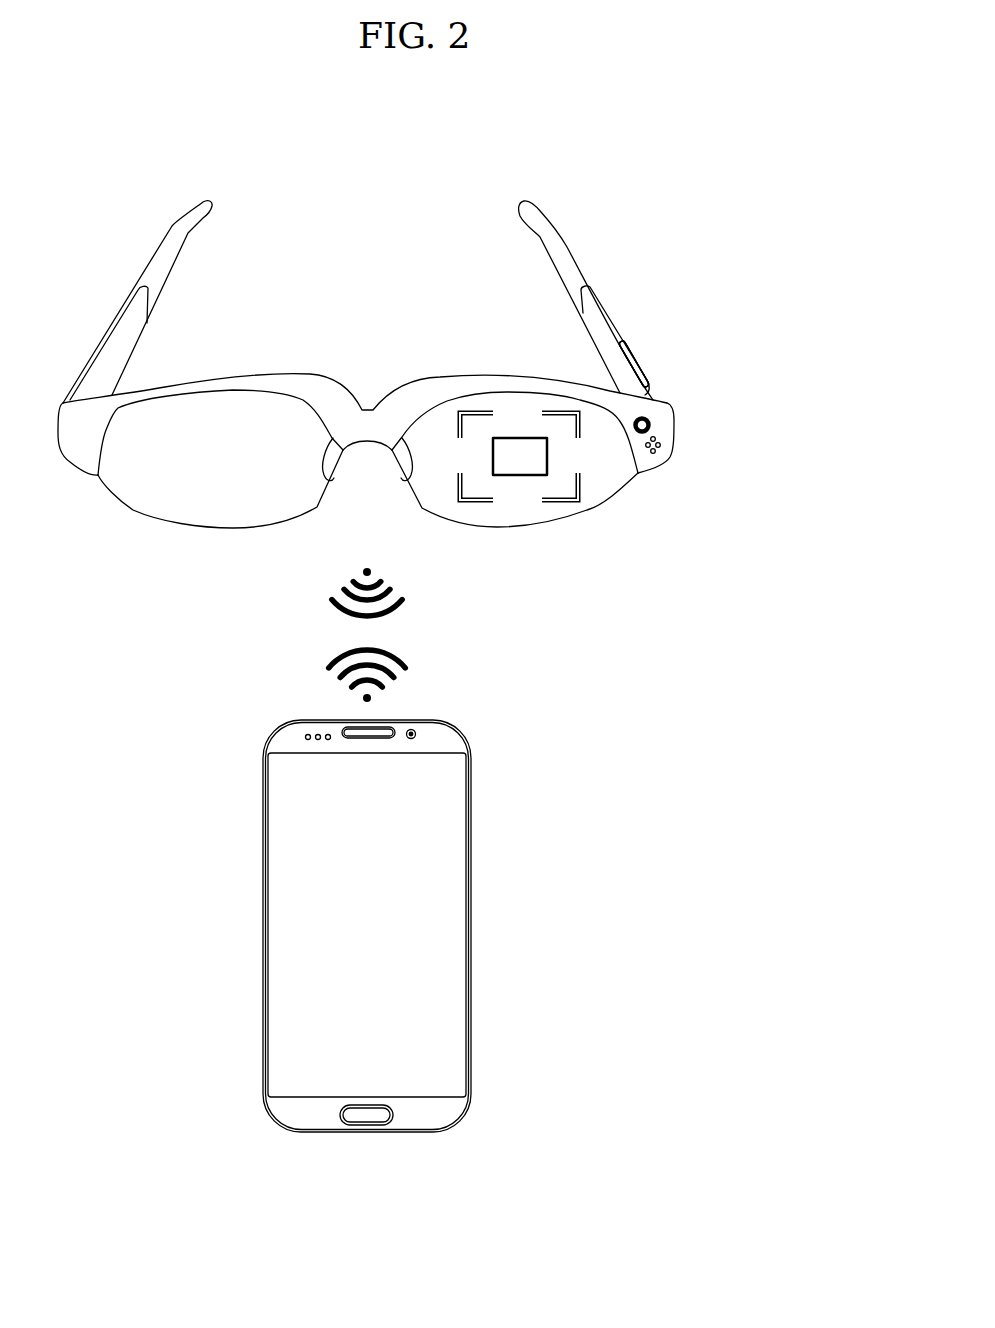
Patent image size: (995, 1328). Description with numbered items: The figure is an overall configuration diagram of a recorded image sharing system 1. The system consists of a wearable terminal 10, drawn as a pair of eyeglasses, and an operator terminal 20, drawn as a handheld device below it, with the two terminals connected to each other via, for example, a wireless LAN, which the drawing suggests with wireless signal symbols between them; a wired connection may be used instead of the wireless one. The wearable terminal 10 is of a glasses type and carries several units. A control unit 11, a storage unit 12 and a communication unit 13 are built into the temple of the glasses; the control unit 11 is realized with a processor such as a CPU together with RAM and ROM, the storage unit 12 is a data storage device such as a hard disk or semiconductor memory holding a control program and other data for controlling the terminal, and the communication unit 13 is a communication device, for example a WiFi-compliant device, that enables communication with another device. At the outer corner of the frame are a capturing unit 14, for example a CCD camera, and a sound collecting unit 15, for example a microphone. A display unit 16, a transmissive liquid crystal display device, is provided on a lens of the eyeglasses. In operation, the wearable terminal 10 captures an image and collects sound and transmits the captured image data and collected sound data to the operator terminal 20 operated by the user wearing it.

The recorded image sharing system 1 is at (419, 347).
The wearable terminal 10 is at (618, 320).
The control unit 11 is at (638, 358).
The storage unit 12 is at (638, 358).
The communication unit 13 is at (638, 358).
The capturing unit 14 is at (648, 420).
The sound collecting unit 15 is at (661, 442).
The display unit 16 is at (580, 483).
The operator terminal 20 is at (472, 793).